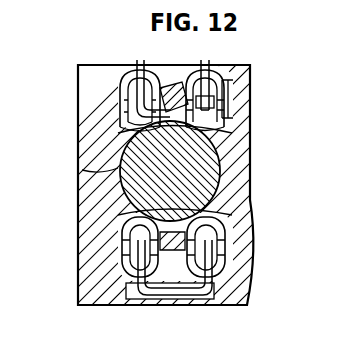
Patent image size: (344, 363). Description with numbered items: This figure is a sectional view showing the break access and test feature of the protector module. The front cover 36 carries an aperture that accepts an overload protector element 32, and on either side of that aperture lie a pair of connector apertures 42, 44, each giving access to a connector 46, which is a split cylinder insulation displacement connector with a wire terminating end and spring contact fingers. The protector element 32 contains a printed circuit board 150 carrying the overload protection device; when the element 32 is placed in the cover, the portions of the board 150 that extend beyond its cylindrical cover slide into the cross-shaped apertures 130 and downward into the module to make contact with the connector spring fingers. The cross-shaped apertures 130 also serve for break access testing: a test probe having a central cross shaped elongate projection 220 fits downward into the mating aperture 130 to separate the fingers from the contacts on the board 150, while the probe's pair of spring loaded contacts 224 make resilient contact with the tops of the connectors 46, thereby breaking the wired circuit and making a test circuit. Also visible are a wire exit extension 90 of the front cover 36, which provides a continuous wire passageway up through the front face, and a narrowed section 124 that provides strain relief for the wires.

The overload protector element 32 is at (210, 181).
The front cover 36 is at (80, 139).
The connector aperture 42 is at (133, 85).
The connector aperture 44 is at (228, 266).
The connector 46 is at (126, 116).
The wire exit extension 90 is at (160, 290).
The narrowed section 124 is at (140, 66).
The cross-shaped aperture 130 is at (236, 126).
The printed circuit board 150 is at (222, 79).
The cross shaped elongate projection 220 is at (180, 66).
The spring loaded contact 224 is at (230, 100).